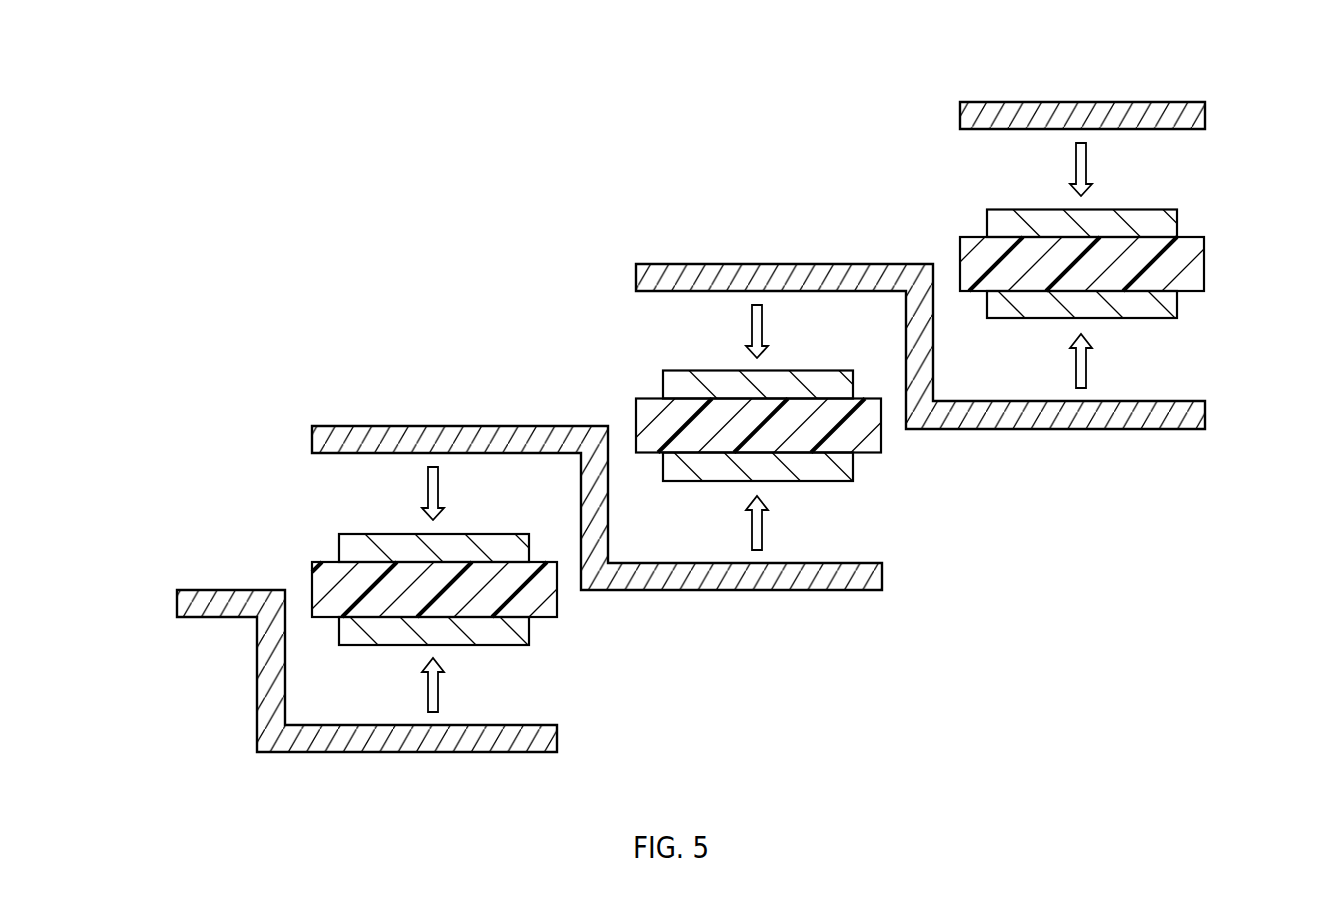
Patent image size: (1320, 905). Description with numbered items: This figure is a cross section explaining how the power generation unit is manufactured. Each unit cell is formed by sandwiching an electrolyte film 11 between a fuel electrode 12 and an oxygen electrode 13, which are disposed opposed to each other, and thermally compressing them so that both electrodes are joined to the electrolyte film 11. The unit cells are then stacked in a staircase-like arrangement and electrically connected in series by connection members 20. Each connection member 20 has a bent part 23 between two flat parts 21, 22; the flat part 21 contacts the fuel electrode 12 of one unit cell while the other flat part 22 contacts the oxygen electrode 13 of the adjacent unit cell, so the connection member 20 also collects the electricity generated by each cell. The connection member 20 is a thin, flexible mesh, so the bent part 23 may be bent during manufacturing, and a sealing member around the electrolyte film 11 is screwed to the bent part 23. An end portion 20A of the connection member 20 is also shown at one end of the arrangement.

The electrolyte film 11 is at (503, 610).
The fuel electrode 12 is at (468, 632).
The oxygen electrode 13 is at (482, 547).
The connection member 20 is at (521, 769).
The end portion of heat transfer member 20A is at (228, 603).
The flat part 21 is at (463, 437).
The flat part 22 is at (405, 742).
The bent part 23 is at (605, 525).